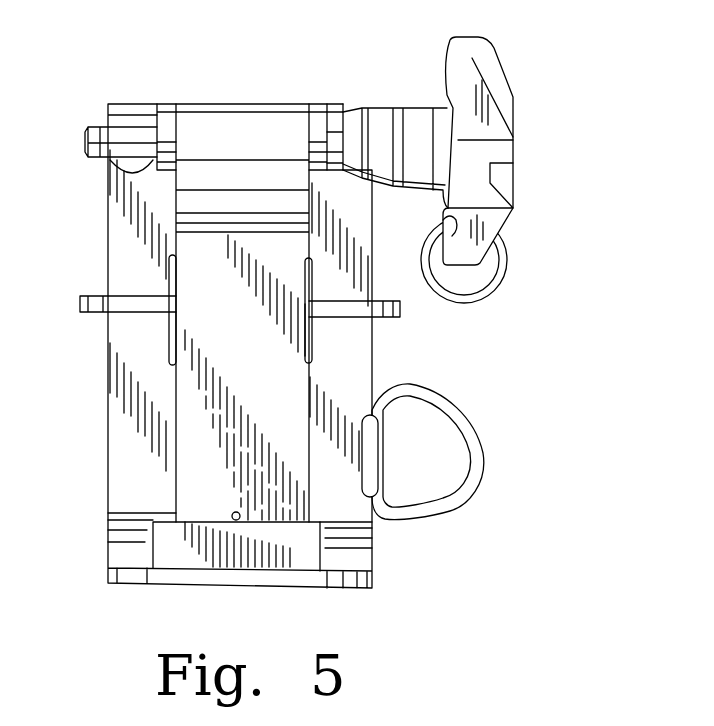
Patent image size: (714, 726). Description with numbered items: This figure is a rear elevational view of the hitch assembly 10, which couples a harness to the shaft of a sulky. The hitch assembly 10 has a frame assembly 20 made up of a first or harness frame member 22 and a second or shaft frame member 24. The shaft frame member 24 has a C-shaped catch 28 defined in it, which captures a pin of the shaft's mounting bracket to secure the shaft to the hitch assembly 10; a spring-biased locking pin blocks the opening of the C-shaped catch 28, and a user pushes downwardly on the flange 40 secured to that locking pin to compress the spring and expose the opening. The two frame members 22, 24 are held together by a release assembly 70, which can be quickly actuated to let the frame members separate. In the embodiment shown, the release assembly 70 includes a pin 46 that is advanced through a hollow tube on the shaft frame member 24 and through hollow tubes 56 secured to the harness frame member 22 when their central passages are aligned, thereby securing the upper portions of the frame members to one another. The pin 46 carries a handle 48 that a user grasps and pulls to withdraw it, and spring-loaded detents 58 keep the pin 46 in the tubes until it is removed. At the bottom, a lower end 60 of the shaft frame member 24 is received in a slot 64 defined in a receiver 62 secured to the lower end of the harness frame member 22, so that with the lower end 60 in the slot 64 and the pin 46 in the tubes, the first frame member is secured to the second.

The hitch assembly 10 is at (497, 155).
The frame assembly 20 is at (383, 345).
The harness frame member 22 is at (368, 363).
The shaft frame member 24 is at (182, 397).
The C-shaped catch 28 is at (253, 125).
The flange 40 is at (80, 303).
The pin 46 is at (113, 130).
The handle 48 is at (497, 125).
The hollow tubes 56 is at (170, 123).
The spring-loaded detents 58 is at (103, 166).
The lower end 60 is at (182, 500).
The receiver 62 is at (308, 557).
The slot 64 is at (238, 521).
The release assembly 70 is at (357, 58).